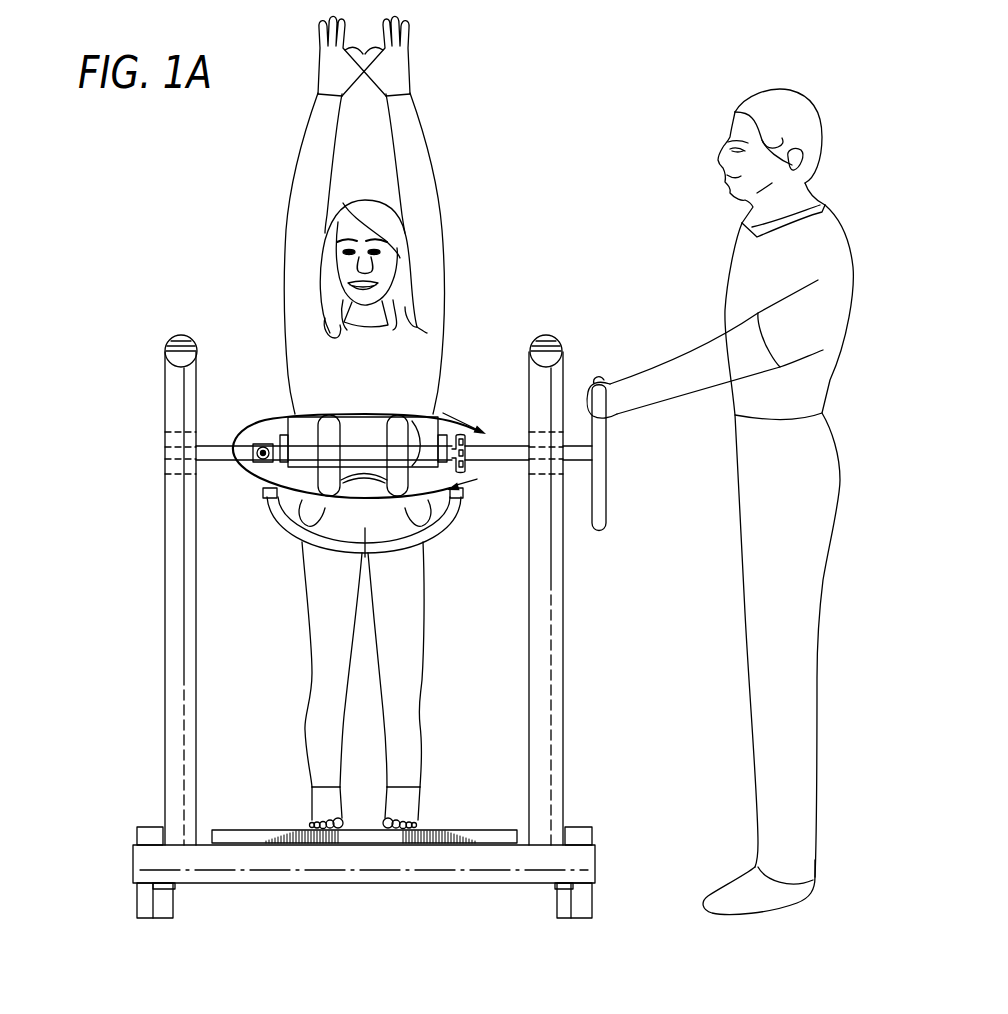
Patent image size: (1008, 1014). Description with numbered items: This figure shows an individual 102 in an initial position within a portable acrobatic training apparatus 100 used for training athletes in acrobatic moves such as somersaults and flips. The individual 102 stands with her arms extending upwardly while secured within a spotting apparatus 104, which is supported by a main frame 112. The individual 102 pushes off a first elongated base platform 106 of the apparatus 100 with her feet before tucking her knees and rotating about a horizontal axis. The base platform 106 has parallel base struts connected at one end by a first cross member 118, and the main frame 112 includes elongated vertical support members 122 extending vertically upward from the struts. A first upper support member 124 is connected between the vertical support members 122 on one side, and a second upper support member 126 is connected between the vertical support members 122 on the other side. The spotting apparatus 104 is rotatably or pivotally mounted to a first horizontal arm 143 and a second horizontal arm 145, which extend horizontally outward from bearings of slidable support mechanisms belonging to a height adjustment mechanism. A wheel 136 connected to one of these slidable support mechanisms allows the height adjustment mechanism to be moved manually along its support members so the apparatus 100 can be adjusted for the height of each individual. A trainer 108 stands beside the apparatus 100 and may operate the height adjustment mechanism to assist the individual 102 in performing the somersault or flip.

The portable acrobatic training apparatus 100 is at (146, 580).
The individual 102 is at (468, 172).
The spotting apparatus 104 is at (461, 409).
The first elongated base platform 106 is at (406, 843).
The trainer 108 is at (848, 204).
The main frame 112 is at (146, 340).
The first cross member 118 is at (308, 857).
The elongated vertical support members 122 is at (182, 704).
The first upper support member 124 is at (182, 345).
The second upper support member 126 is at (547, 336).
The wheel 136 is at (599, 509).
The first horizontal arm 143 is at (505, 436).
The second horizontal arm 145 is at (219, 432).